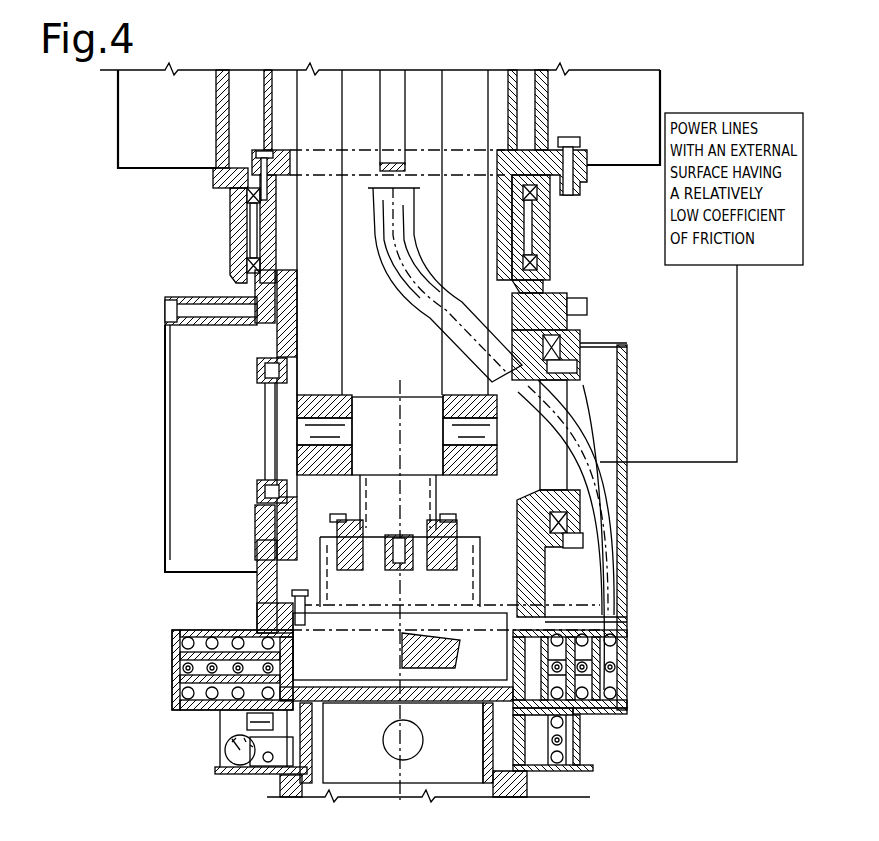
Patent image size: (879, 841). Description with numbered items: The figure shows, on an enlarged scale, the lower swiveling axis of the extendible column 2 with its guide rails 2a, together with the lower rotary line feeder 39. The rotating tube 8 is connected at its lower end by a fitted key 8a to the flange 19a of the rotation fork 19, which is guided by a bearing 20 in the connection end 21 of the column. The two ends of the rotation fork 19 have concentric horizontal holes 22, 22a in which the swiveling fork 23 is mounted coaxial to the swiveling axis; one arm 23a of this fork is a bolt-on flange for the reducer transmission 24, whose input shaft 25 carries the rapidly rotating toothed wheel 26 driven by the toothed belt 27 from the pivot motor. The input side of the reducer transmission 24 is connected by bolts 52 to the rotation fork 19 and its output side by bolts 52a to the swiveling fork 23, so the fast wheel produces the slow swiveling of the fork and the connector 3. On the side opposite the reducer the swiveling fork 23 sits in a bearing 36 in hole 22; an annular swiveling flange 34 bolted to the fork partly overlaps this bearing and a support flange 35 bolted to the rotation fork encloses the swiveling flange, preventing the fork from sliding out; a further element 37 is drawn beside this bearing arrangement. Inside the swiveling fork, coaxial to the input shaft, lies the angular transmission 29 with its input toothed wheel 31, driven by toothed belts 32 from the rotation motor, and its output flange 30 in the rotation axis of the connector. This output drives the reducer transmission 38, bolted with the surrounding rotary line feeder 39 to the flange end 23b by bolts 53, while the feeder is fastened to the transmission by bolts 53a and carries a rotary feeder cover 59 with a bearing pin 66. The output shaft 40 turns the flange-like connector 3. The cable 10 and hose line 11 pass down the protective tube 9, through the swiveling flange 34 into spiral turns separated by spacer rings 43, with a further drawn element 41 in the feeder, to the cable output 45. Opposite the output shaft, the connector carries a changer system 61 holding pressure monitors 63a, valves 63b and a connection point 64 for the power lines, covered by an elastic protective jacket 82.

The extendible column 2 is at (224, 70).
The guide rails 2a is at (607, 80).
The connector 3 is at (575, 768).
The rotating tube 8 is at (267, 70).
The fitted key 8a is at (395, 92).
The protective tube 9 is at (412, 186).
The cable 10 is at (535, 441).
The hose line 11 is at (628, 657).
The rotation fork 19 is at (527, 231).
The flange 19a is at (562, 145).
The bearing 20 is at (540, 201).
The connection end 21 is at (238, 212).
The horizontal hole 22 is at (580, 330).
The horizontal hole 22a is at (265, 386).
The swiveling fork 23 is at (565, 548).
The arm of swiveling fork 23a is at (263, 564).
The flange end 23b is at (257, 612).
The reducer transmission 24 is at (200, 495).
The input shaft 25 is at (300, 431).
The toothed wheel 26 is at (300, 463).
The toothed belt 27 is at (312, 80).
The angular transmission 29 is at (563, 467).
The output flange 30 is at (600, 490).
The input toothed wheel 31 is at (520, 418).
The toothed belts 32 is at (472, 130).
The swiveling flange 34 is at (600, 341).
The support flange 35 is at (588, 300).
The bearing 36 is at (568, 524).
The bolt 37 is at (600, 561).
The reducer transmission 38 is at (467, 577).
The rotary line feeder 39 is at (172, 632).
The output shaft 40 is at (427, 657).
The balls 41 is at (181, 643).
The spacer rings 43 is at (172, 656).
The cable output 45 is at (572, 741).
The bolts 52 is at (257, 498).
The bolts 52a is at (165, 311).
The bolts 53 is at (298, 608).
The bolts 53a is at (520, 775).
The rotary feeder cover 59 is at (628, 710).
The changer system 61 is at (325, 797).
The pressure monitors 63a is at (300, 776).
The valves 63b is at (291, 786).
The connection point 64 is at (230, 722).
The bearing pin 66 is at (598, 710).
The protective jacket 82 is at (245, 741).